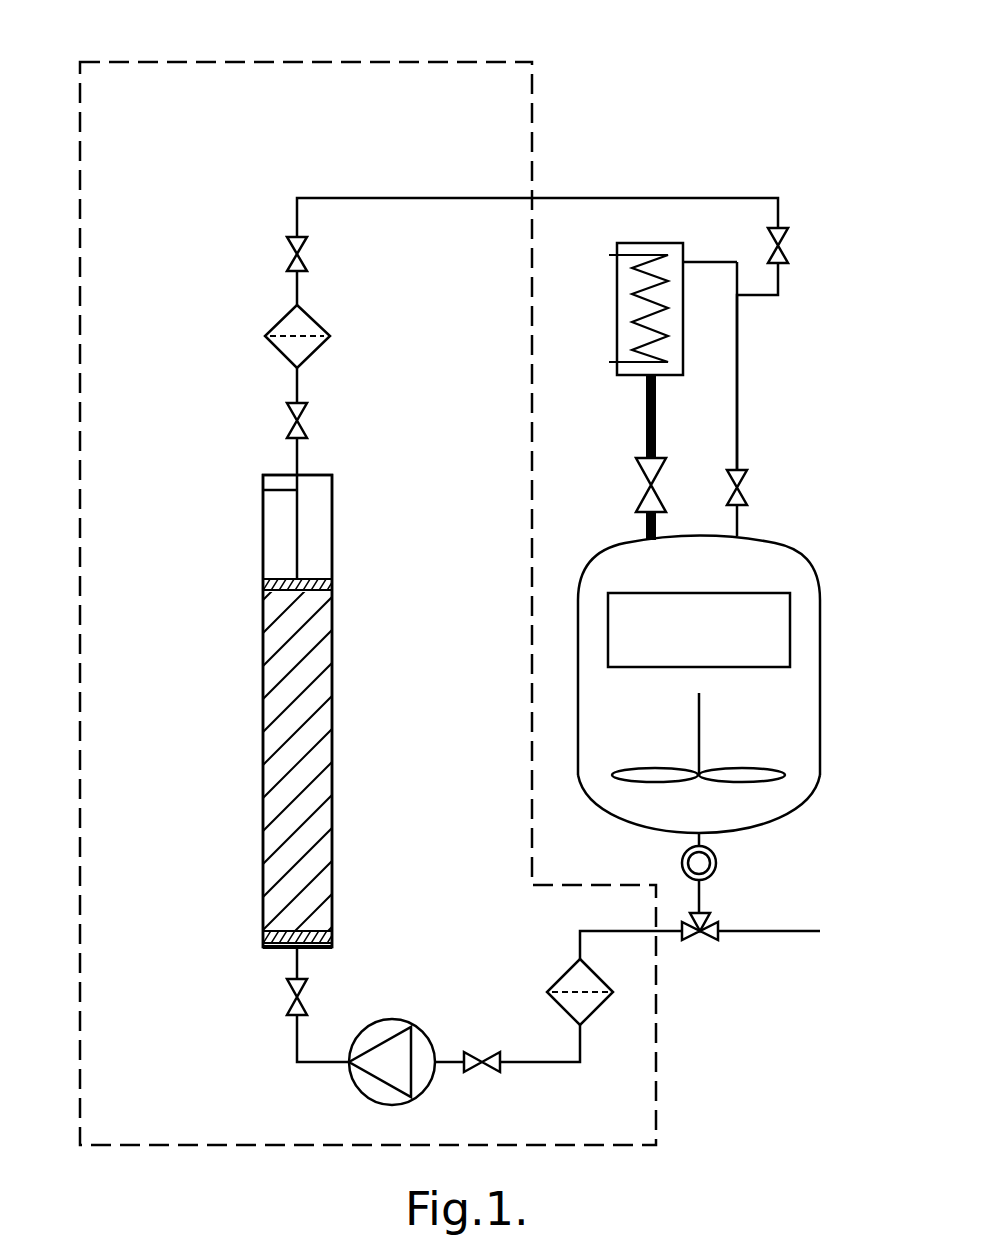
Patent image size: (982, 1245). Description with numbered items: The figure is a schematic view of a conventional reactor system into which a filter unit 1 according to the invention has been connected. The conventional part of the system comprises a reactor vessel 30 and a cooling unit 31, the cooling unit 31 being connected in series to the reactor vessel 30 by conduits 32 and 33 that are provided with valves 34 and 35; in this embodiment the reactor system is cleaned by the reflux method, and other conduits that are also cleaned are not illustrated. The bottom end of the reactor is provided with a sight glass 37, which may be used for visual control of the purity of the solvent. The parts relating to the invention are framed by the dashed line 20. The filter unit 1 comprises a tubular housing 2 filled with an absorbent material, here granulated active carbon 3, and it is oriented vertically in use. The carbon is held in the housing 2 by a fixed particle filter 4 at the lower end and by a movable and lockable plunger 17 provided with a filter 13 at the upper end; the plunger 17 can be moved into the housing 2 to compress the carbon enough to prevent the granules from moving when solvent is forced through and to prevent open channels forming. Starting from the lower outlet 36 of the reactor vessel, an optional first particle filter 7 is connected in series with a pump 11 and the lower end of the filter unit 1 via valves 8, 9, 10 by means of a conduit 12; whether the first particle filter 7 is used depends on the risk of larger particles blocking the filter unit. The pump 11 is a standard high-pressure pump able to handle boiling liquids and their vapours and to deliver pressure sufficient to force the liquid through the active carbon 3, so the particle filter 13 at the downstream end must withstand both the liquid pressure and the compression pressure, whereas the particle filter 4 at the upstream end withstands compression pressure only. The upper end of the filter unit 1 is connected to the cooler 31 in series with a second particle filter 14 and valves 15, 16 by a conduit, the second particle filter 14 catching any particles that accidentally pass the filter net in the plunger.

The filter unit 1 is at (256, 730).
The tubular housing 2 is at (332, 697).
The granulated active carbon 3 is at (316, 785).
The fixed particle filter 4 is at (332, 940).
The first particle filter 7 is at (597, 1013).
The valve 8 is at (700, 942).
The valve 9 is at (480, 1052).
The valve 10 is at (290, 990).
The pump 11 is at (381, 1021).
The conduit 12 is at (580, 948).
The particle filter 13 is at (263, 585).
The second particle filter 14 is at (266, 327).
The valve 15 is at (287, 418).
The valve 16 is at (288, 268).
The plunger 17 is at (297, 518).
The dashed line 20 is at (185, 62).
The reactor vessel 30 is at (820, 618).
The cooling unit 31 is at (617, 290).
The conduit 32 is at (646, 423).
The conduit 33 is at (738, 340).
The valve 34 is at (646, 492).
The valve 35 is at (747, 488).
The lower outlet 36 is at (699, 838).
The sight glass 37 is at (717, 868).